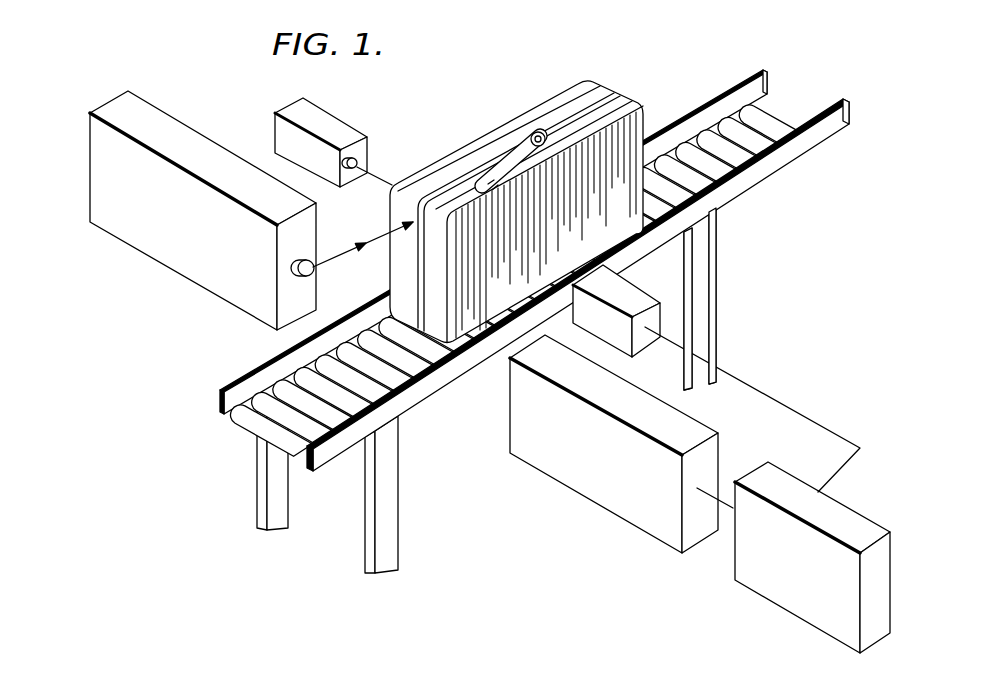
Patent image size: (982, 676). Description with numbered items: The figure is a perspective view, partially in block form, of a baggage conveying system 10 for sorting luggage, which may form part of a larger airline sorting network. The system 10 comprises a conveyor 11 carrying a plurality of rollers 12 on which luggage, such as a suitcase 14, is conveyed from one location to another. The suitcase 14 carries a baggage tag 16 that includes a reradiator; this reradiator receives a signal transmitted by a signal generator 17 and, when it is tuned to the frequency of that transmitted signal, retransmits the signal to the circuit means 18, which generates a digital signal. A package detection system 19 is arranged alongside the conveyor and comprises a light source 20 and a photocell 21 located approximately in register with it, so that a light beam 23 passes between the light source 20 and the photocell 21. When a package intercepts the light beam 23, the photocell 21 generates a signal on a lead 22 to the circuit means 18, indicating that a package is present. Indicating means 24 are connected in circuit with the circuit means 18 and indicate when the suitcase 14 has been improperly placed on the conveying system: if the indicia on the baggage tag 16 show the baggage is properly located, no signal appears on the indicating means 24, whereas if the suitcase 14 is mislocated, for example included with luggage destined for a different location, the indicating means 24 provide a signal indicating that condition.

The baggage conveying system 10 is at (495, 321).
The conveyor 11 is at (432, 390).
The rollers 12 is at (242, 398).
The suitcase 14 is at (516, 210).
The baggage tag 16 is at (510, 358).
The signal generator 17 is at (233, 282).
The circuit means 18 is at (588, 485).
The package detection system 19 is at (672, 298).
The light source 20 is at (332, 127).
The photocell 21 is at (635, 297).
The lead 22 is at (777, 400).
The light beam 23 is at (378, 177).
The indicating means 24 is at (773, 582).